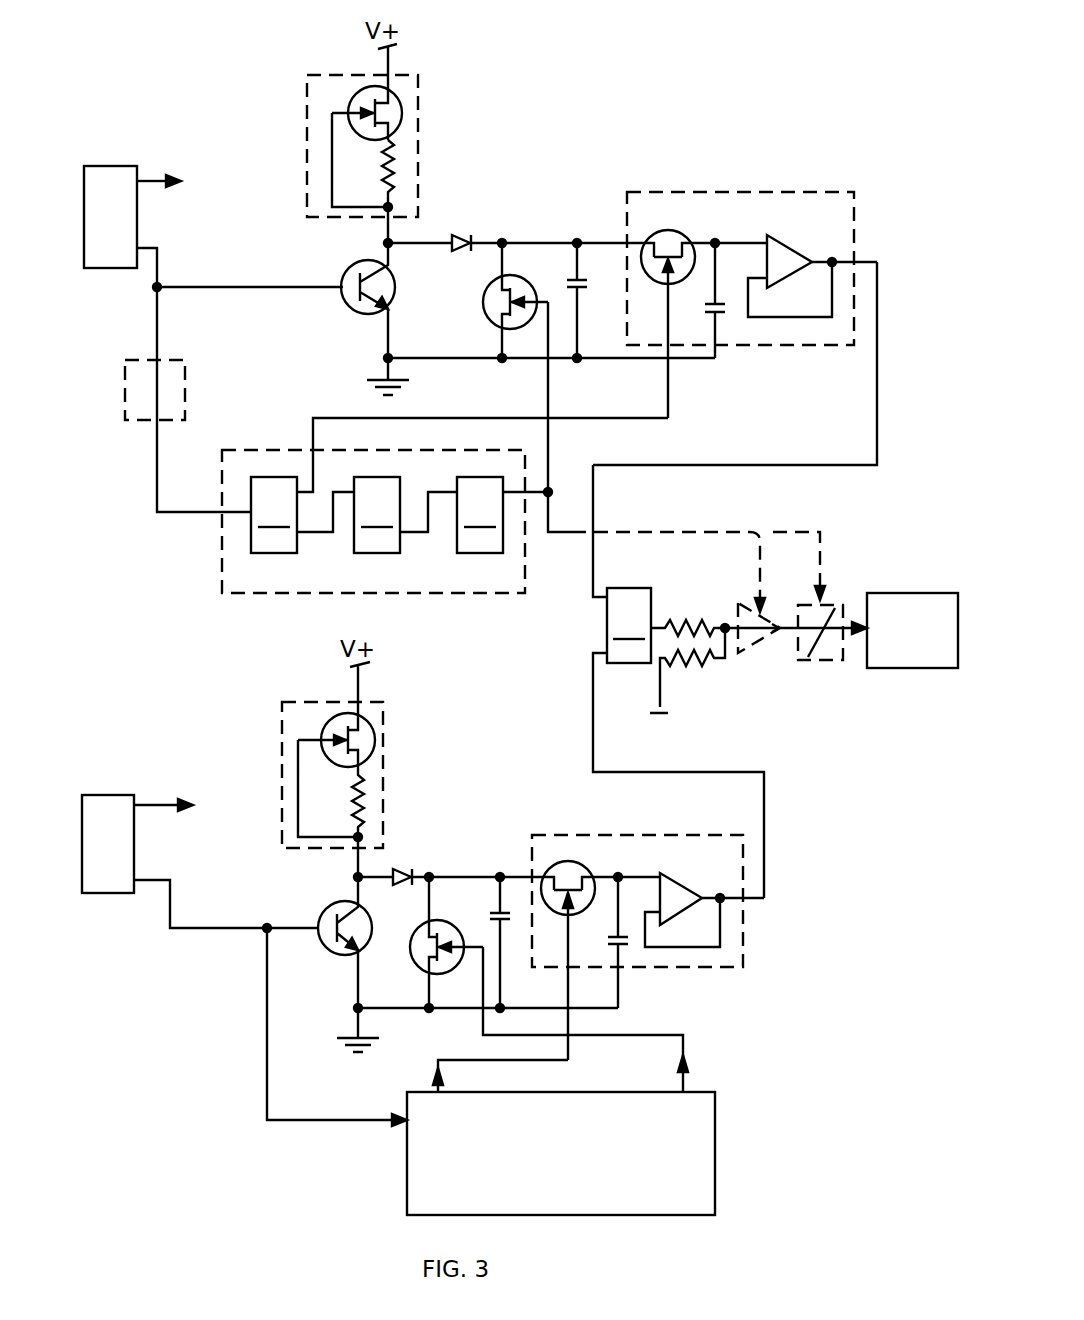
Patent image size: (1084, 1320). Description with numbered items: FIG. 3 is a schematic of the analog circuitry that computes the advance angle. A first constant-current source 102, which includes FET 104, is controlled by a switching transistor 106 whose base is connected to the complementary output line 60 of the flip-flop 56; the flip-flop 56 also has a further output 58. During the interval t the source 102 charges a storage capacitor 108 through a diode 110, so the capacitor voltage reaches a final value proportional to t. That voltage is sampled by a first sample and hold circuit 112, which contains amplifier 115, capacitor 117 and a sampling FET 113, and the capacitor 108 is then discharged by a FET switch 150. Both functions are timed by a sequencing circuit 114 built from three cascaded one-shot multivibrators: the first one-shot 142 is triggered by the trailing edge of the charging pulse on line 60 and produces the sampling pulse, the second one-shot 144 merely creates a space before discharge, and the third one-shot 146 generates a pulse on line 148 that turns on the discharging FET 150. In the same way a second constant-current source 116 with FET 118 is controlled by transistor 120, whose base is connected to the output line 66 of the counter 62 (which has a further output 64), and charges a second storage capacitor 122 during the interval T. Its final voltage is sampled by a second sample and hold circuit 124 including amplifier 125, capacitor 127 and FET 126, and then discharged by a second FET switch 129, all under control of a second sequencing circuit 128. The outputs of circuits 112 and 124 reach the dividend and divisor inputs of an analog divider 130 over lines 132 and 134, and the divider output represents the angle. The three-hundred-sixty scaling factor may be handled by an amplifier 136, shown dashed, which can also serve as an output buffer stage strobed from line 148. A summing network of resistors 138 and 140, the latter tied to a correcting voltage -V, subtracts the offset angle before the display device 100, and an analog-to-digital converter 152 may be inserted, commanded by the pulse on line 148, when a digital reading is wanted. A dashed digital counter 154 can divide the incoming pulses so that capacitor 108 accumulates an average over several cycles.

The flip-flop 56 is at (120, 165).
The first sensor output 58 is at (152, 180).
The complementary output line 60 is at (161, 276).
The counter 62 is at (94, 793).
The second sensor output 64 is at (153, 800).
The output line 66 is at (168, 907).
The display device 100 is at (902, 592).
The first constant-current source 102 is at (420, 102).
The FET 104 is at (360, 93).
The switching transistor 106 is at (350, 309).
The storage capacitor 108 is at (600, 273).
The diode 110 is at (463, 233).
The first sample and hold circuit 112 is at (705, 190).
The sampling FET switch 113 is at (678, 231).
The sequencing circuit 114 is at (228, 449).
The amplifier 115 is at (792, 252).
The second constant-current source 116 is at (385, 802).
The capacitor 117 is at (702, 310).
The FET 118 is at (372, 733).
The transistor 120 is at (323, 907).
The second storage capacitor 122 is at (490, 914).
The second sample and hold circuit 124 is at (622, 833).
The amplifier 125 is at (693, 887).
The FET 126 is at (582, 868).
The capacitor 127 is at (612, 937).
The second sequencing circuit 128 is at (717, 1165).
The second FET switch 129 is at (408, 933).
The analog divider 130 is at (629, 625).
The line 132 is at (877, 353).
The line 134 is at (593, 735).
The amplifier 136 is at (758, 640).
The resistor 138 is at (677, 622).
The resistor 140 is at (696, 665).
The first one-shot multivibrator 142 is at (274, 515).
The second one-shot multivibrator 144 is at (377, 515).
The third one-shot multivibrator 146 is at (480, 515).
The line 148 is at (550, 383).
The FET switch 150 is at (492, 322).
The analog-to-digital converter 152 is at (829, 601).
The digital counter 154 is at (125, 397).